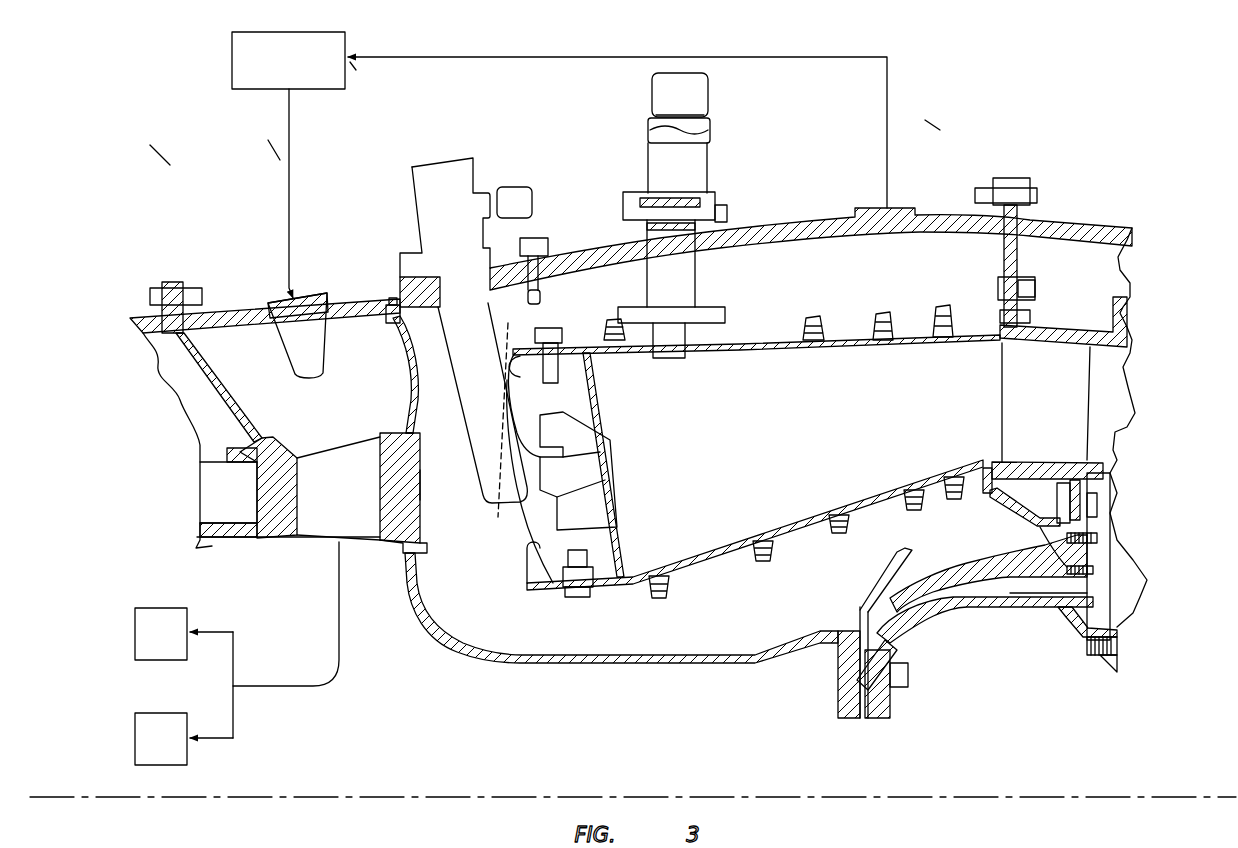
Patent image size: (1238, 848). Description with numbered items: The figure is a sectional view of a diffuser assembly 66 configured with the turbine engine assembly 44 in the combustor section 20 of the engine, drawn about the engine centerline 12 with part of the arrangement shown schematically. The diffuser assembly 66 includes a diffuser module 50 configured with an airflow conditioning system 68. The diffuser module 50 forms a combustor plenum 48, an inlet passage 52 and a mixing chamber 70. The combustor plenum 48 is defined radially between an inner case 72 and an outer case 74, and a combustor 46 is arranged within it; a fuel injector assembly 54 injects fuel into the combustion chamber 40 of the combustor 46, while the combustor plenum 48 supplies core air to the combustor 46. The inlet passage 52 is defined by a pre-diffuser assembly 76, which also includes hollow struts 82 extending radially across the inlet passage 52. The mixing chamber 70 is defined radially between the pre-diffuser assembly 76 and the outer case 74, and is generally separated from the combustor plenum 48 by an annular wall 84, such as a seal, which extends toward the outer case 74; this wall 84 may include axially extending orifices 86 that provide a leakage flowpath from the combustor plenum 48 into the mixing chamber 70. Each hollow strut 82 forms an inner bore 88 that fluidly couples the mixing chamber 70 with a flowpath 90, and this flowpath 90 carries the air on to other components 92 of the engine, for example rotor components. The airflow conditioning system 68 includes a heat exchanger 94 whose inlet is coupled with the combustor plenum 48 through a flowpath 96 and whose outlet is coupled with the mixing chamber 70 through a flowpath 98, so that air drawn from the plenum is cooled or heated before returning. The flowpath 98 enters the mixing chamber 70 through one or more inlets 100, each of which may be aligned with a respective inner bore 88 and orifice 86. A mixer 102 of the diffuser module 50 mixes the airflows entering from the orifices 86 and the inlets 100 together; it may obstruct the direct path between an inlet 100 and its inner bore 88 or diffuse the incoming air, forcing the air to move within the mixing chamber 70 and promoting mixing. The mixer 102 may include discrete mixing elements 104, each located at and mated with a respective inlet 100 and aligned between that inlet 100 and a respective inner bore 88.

The centerline 12 is at (1020, 797).
The combustor section 20 is at (930, 122).
The combustion chamber 40 is at (773, 444).
The turbine engine assembly 44 is at (163, 157).
The combustor 46 is at (783, 327).
The combustor plenum 48 is at (875, 289).
The diffuser module 50 is at (578, 244).
The inlet passage 52 is at (245, 500).
The fuel injector assembly 54 is at (503, 513).
The diffuser assembly 66 is at (275, 153).
The airflow conditioning system 68 is at (357, 72).
The mixing chamber 70 is at (278, 435).
The inner case 72 is at (644, 663).
The outer case 74 is at (811, 208).
The pre-diffuser assembly 76 is at (238, 436).
The hollow strut 82 is at (420, 497).
The annular wall 84 is at (420, 393).
The orifice 86 is at (398, 347).
The inner bore 88 is at (326, 499).
The flowpath 90 is at (322, 683).
The component 92 is at (149, 645).
The heat exchanger 94 is at (296, 70).
The flowpath 96 is at (568, 60).
The flowpath 98 is at (287, 220).
The inlet 100 is at (293, 297).
The mixer 102 is at (278, 366).
The mixing element 104 is at (322, 297).